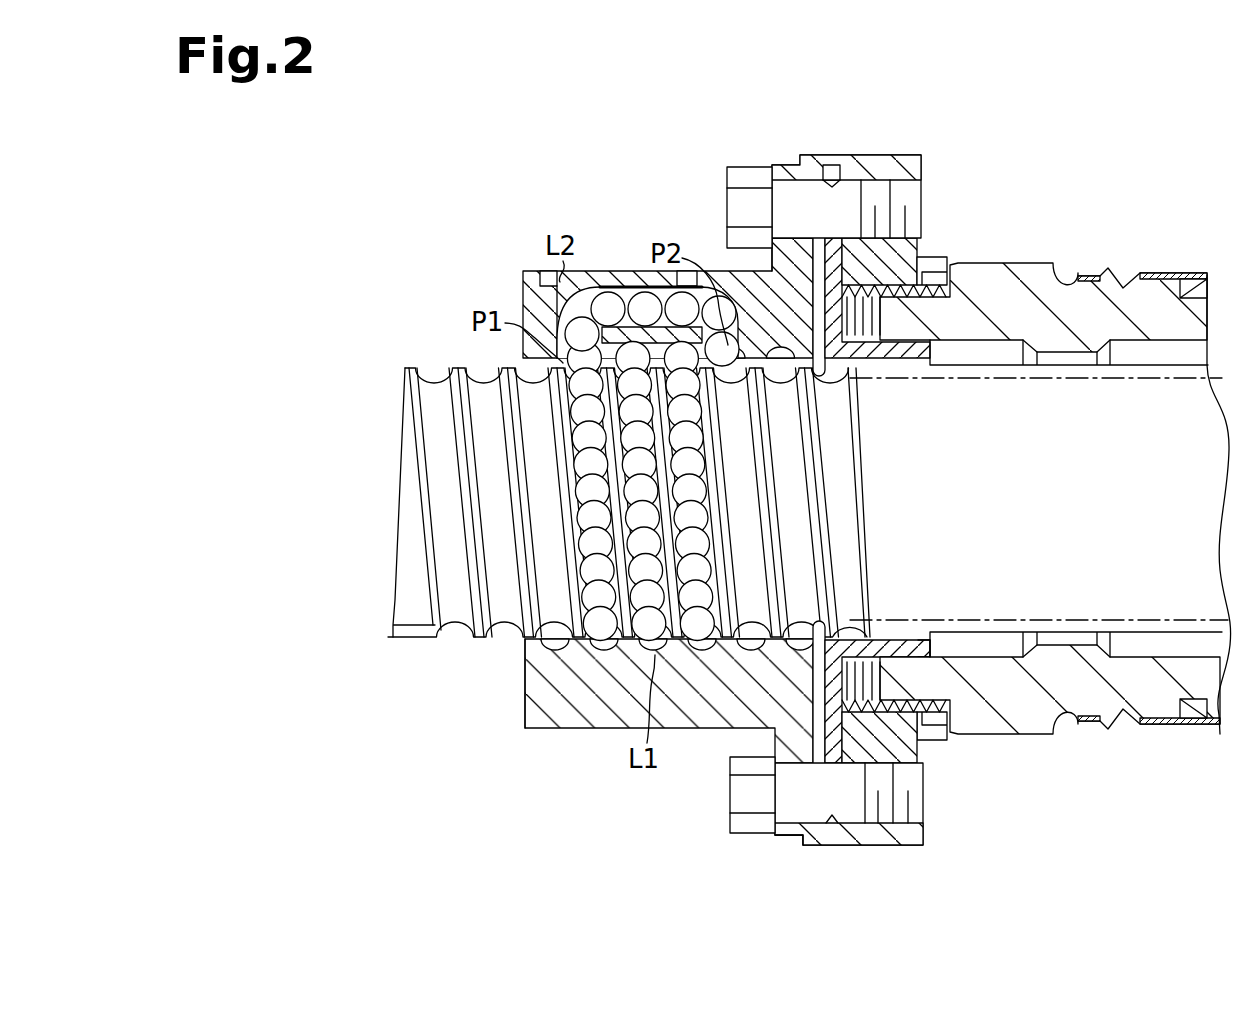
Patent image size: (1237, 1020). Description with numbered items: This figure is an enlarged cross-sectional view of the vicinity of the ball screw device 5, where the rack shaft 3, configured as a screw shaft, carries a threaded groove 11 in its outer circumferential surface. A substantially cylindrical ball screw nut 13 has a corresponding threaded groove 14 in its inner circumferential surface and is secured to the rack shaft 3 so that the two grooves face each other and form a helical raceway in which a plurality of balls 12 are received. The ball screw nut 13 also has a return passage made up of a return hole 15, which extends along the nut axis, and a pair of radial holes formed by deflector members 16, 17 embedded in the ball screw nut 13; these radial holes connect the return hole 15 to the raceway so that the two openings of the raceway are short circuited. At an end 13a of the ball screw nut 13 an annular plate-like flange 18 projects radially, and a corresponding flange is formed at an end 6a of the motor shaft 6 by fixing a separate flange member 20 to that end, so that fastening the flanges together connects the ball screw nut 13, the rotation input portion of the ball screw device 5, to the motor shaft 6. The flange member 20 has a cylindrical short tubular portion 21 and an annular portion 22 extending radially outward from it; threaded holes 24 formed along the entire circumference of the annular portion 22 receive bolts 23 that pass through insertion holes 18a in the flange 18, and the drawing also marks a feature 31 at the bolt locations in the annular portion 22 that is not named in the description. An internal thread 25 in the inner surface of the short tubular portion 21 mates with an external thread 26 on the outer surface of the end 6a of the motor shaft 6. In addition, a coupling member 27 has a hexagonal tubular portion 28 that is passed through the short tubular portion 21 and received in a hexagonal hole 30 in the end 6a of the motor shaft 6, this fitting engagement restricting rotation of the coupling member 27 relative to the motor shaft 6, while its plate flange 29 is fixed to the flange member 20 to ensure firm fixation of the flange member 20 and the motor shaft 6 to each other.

The rack shaft 3 is at (1111, 517).
The ball screw device 5 is at (460, 189).
The motor shaft 6 is at (1048, 262).
The end of the motor shaft 6a is at (905, 328).
The threaded groove 11 is at (547, 372).
The balls 12 is at (702, 568).
The ball screw nut 13 is at (553, 730).
The end of the ball screw nut 13a is at (855, 618).
The threaded groove 14 is at (525, 672).
The return hole 15 is at (628, 283).
The deflector member 16 is at (580, 306).
The deflector member 17 is at (720, 270).
The flange 18 is at (792, 167).
The insertion holes 18a is at (783, 820).
The flange member 20 is at (977, 143).
The short tubular portion 21 is at (935, 262).
The annular portion 22 is at (913, 160).
The bolts 23 is at (750, 167).
The threaded holes 24 is at (873, 182).
The internal thread 25 is at (900, 715).
The external thread 26 is at (905, 700).
The coupling member 27 is at (853, 362).
The tubular portion 28 is at (900, 650).
The plate flange 29 is at (833, 733).
The hexagonal hole 30 is at (898, 663).
The bolt hole 31 is at (832, 165).